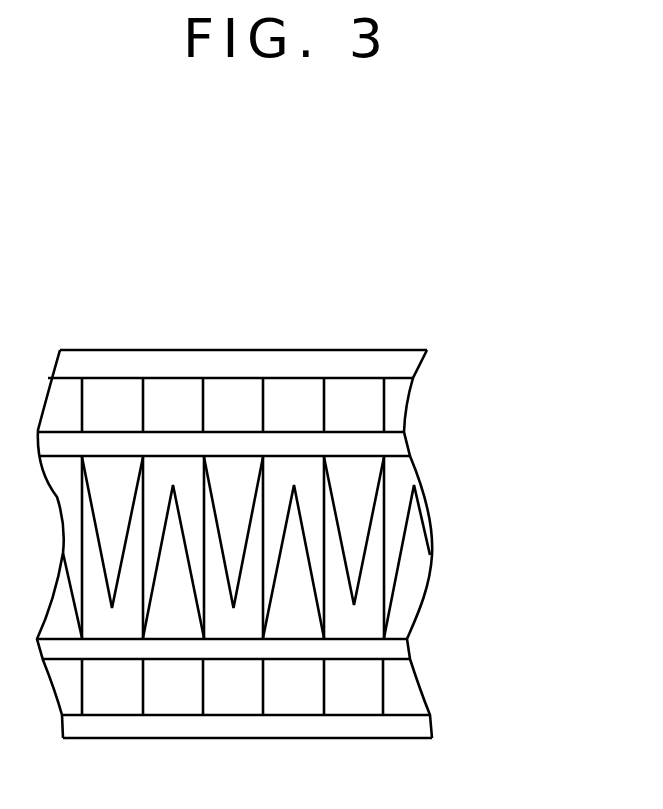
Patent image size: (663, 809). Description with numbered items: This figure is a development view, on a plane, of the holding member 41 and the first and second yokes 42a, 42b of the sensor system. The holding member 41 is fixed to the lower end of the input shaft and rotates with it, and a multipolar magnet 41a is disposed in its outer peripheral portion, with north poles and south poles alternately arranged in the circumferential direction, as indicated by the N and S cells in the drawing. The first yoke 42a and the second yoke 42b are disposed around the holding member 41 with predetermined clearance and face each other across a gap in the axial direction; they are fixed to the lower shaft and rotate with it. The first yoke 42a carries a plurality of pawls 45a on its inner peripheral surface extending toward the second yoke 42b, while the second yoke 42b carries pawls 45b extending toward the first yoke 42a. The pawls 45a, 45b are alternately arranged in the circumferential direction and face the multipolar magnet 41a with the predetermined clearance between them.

The holding member 41 is at (363, 350).
The multipolar magnet 41a is at (293, 404).
The first yoke 42a is at (362, 431).
The second yoke 42b is at (398, 660).
The pawls 45a is at (355, 524).
The pawls 45b is at (413, 567).